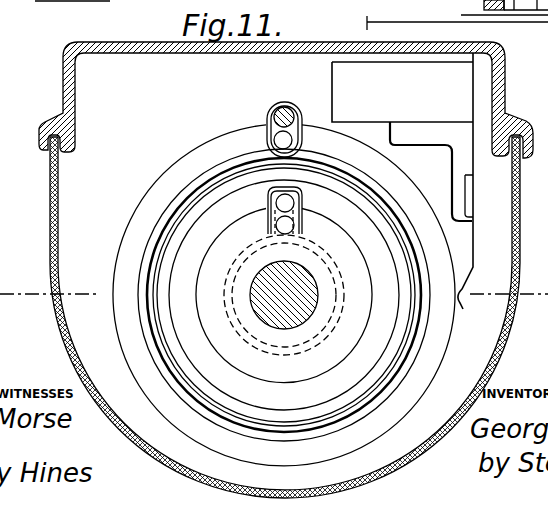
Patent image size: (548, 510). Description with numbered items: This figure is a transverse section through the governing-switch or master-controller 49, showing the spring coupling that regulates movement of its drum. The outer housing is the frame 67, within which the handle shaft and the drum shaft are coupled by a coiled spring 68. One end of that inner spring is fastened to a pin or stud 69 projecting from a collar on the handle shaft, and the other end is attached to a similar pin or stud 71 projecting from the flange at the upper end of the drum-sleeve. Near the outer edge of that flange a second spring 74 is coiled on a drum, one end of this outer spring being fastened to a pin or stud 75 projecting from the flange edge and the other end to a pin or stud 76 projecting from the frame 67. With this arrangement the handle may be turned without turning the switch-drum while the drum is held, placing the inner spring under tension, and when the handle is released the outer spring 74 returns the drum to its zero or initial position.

The frame 67 is at (194, 47).
The governing-switch 49 is at (267, 317).
The pin or stud 75 is at (270, 132).
The pin or stud 76 is at (285, 109).
The second spring 74 is at (369, 187).
The pin or stud 71 is at (294, 201).
The pin or stud 69 is at (282, 237).
The coiled spring 68 is at (309, 250).